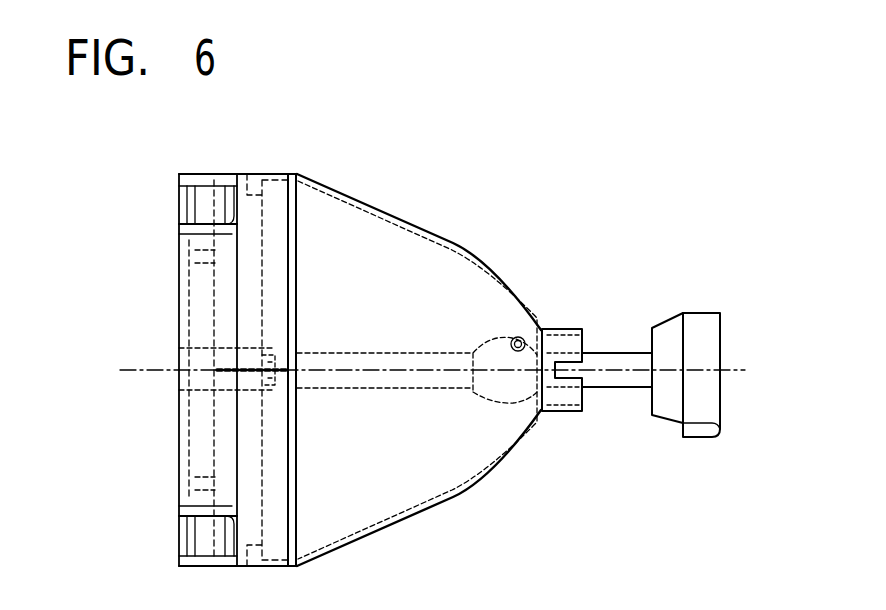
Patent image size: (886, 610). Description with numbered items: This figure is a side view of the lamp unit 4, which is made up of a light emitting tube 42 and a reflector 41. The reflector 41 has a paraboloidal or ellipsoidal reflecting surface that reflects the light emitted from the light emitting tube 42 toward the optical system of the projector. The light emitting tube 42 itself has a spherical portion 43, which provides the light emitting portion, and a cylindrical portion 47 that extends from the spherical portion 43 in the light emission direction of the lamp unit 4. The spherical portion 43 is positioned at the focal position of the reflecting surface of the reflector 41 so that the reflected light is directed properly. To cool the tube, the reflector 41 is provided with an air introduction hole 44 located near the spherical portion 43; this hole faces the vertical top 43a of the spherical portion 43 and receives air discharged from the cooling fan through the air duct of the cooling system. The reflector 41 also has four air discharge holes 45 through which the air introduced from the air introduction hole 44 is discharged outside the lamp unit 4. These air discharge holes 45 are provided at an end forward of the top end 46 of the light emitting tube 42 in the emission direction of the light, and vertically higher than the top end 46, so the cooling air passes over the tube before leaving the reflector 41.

The lamp unit 4 is at (526, 150).
The reflector 41 is at (397, 210).
The light emitting tube 42 is at (371, 352).
The spherical portion 43 is at (497, 382).
The vertical top 43a is at (511, 336).
The air introduction hole 44 is at (540, 330).
The air discharge holes 45 is at (243, 186).
The top end 46 is at (298, 323).
The cylindrical portion 47 is at (368, 390).